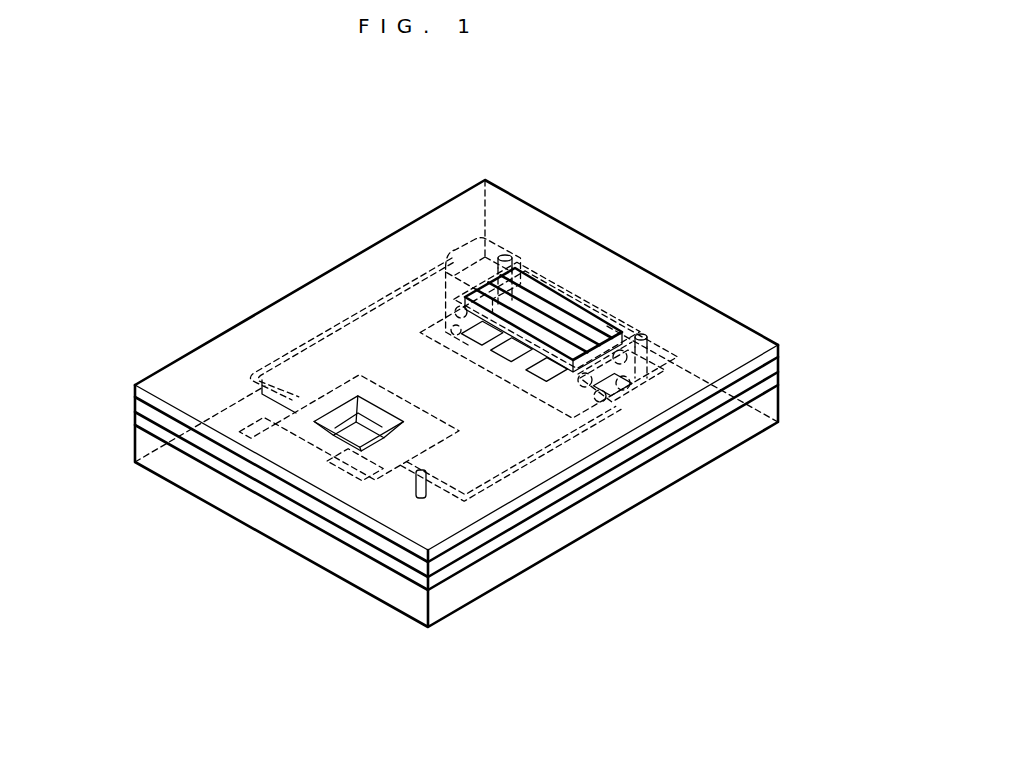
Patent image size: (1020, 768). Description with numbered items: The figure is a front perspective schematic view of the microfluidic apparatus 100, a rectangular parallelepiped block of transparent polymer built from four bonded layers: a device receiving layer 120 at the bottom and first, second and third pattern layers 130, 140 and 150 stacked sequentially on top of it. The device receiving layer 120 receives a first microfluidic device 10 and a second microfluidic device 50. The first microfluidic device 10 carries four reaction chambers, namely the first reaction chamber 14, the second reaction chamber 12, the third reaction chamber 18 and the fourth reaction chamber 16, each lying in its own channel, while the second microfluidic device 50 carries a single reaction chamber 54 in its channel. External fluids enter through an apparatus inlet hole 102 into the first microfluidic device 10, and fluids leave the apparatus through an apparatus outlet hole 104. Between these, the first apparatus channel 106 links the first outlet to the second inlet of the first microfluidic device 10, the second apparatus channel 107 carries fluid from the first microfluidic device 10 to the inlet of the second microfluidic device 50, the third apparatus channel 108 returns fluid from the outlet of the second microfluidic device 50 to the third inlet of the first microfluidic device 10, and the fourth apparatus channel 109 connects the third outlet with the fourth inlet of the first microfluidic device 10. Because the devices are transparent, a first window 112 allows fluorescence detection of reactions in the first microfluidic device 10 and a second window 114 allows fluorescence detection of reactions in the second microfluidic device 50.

The microfluidic apparatus 100 is at (181, 240).
The first microfluidic device 10 is at (425, 315).
The second reaction chamber 12 is at (508, 312).
The first reaction chamber 14 is at (560, 345).
The fourth reaction chamber 16 is at (600, 352).
The third reaction chamber 18 is at (605, 358).
The second microfluidic device 50 is at (257, 415).
The reaction chamber 54 is at (357, 467).
The apparatus inlet hole 102 is at (506, 256).
The apparatus outlet hole 104 is at (643, 335).
The first apparatus channel 106 is at (457, 298).
The second apparatus channel 107 is at (327, 340).
The third apparatus channel 108 is at (553, 443).
The fourth apparatus channel 109 is at (597, 380).
The first window 112 is at (556, 330).
The second window 114 is at (366, 422).
The device receiving layer 120 is at (148, 448).
The first pattern layer 130 is at (148, 420).
The second pattern layer 140 is at (150, 406).
The third pattern layer 150 is at (150, 394).